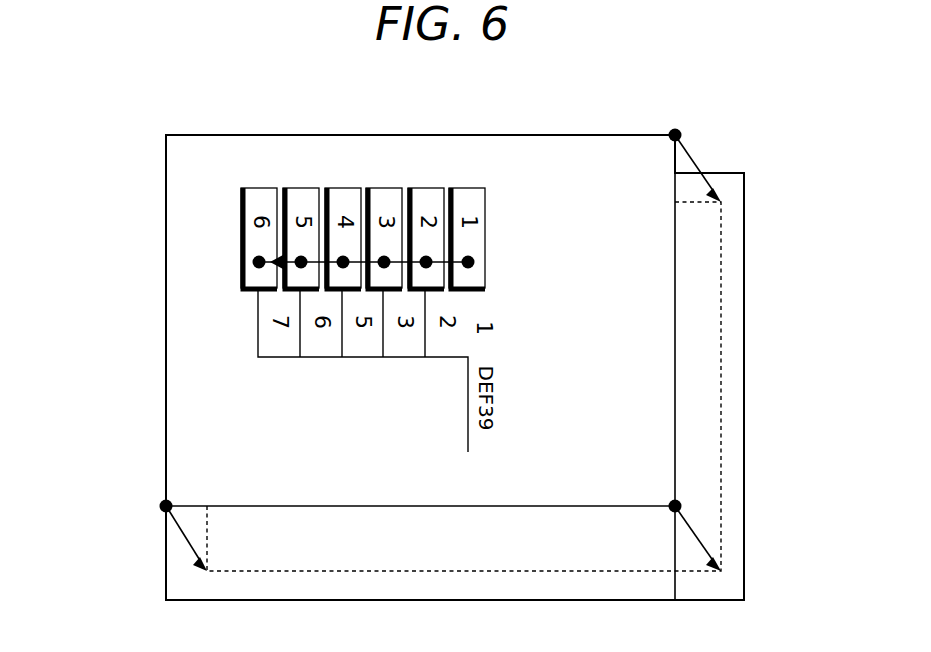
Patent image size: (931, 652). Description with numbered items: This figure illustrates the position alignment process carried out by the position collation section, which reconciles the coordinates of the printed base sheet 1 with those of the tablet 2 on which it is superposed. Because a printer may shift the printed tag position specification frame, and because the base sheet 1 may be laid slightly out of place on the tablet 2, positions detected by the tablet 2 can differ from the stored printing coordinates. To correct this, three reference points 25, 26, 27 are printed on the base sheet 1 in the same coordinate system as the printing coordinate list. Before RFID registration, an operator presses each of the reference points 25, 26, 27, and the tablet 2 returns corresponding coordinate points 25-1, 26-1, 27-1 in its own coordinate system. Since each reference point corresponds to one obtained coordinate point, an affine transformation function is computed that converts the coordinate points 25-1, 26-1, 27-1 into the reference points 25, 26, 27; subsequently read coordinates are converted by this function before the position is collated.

The base sheet 1 is at (520, 135).
The tablet 2 is at (745, 352).
The reference point 25 is at (681, 134).
The coordinate point 25-1 is at (722, 204).
The reference point 26 is at (681, 504).
The coordinate point 26-1 is at (722, 573).
The reference point 27 is at (162, 505).
The coordinate point 27-1 is at (206, 571).